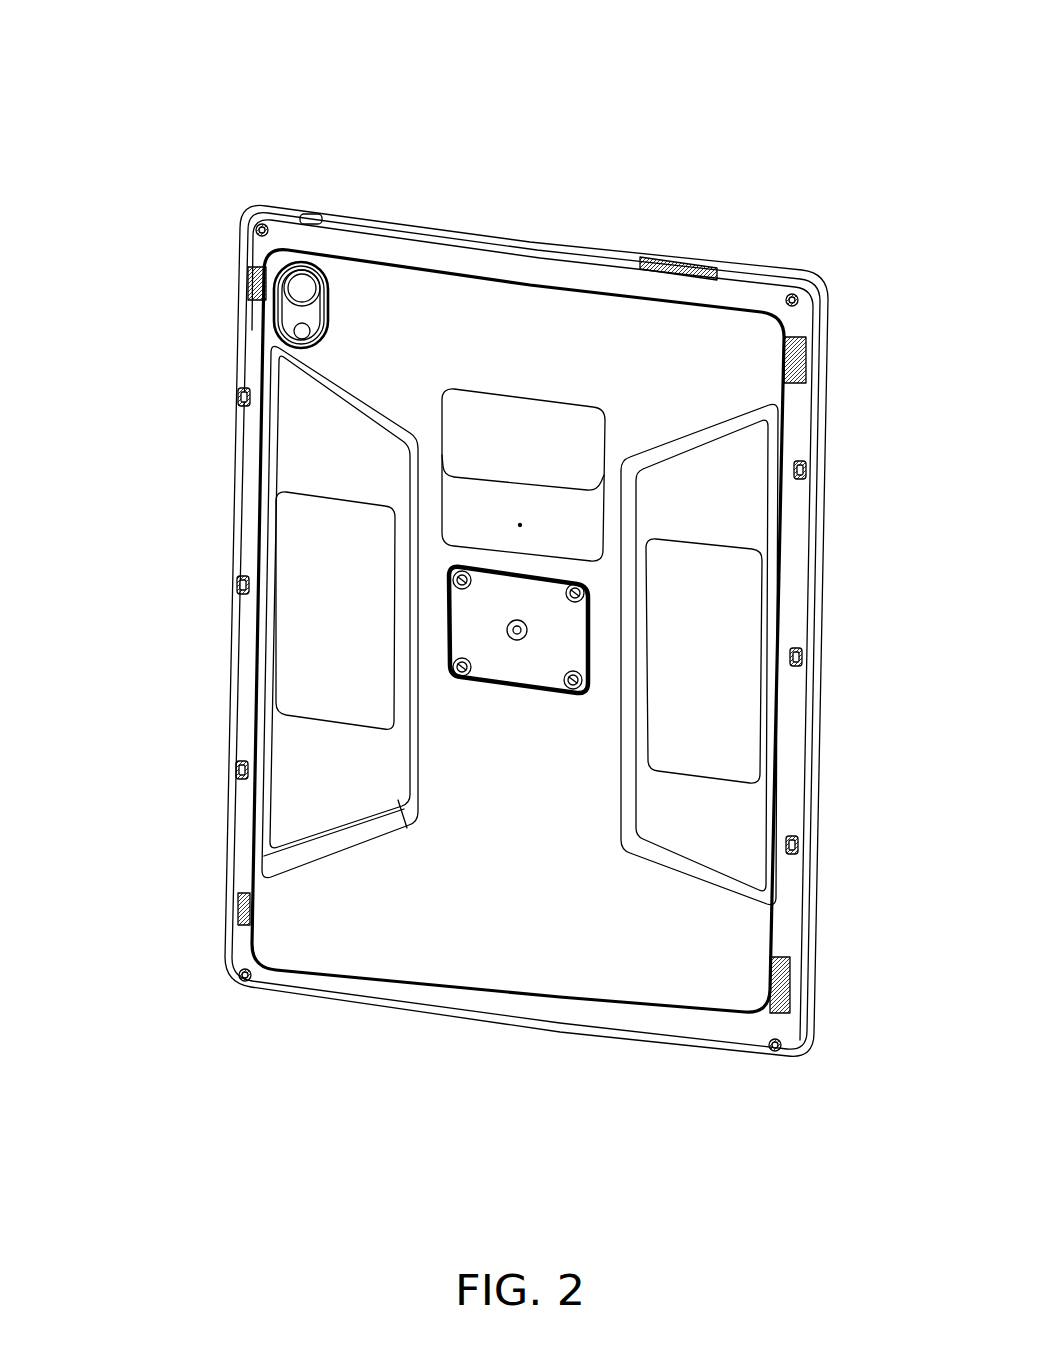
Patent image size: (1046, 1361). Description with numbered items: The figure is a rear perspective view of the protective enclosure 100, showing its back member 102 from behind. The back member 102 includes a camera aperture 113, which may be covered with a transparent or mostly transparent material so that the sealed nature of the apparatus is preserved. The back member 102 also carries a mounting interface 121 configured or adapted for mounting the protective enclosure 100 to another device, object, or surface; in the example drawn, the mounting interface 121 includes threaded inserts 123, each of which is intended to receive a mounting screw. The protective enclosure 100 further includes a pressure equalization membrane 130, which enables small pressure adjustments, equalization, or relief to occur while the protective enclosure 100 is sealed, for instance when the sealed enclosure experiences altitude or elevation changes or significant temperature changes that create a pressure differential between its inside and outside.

The protective enclosure 100 is at (503, 532).
The back member 102 is at (818, 765).
The camera aperture 113 is at (290, 309).
The mounting interface 121 is at (440, 628).
The threaded inserts 123 is at (582, 680).
The pressure equalization membrane 130 is at (502, 625).